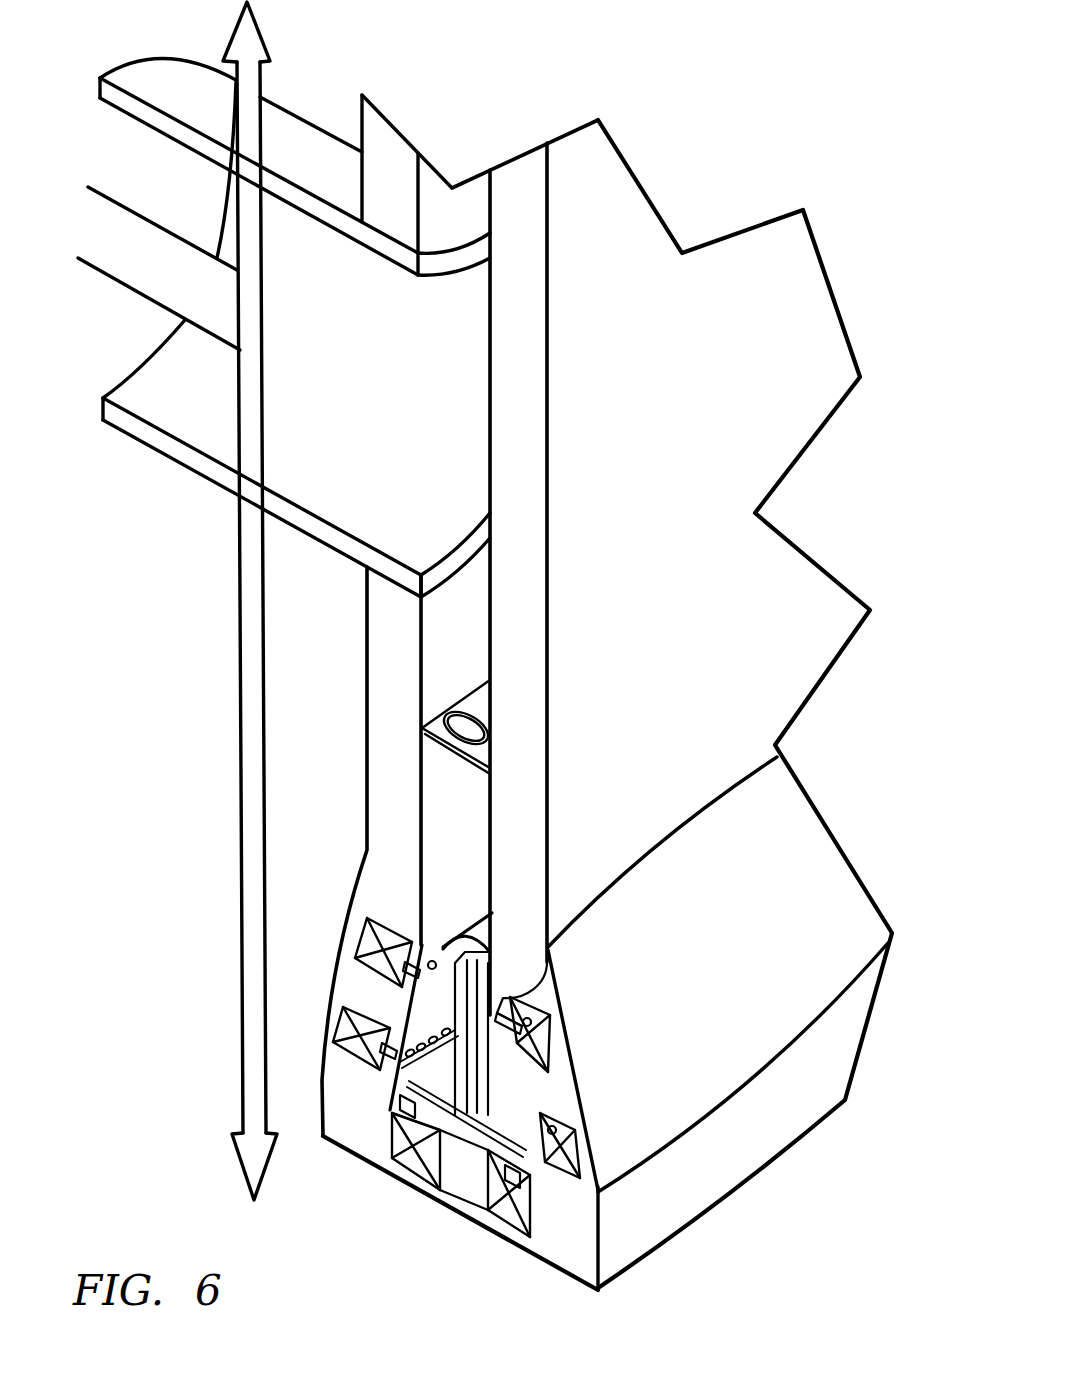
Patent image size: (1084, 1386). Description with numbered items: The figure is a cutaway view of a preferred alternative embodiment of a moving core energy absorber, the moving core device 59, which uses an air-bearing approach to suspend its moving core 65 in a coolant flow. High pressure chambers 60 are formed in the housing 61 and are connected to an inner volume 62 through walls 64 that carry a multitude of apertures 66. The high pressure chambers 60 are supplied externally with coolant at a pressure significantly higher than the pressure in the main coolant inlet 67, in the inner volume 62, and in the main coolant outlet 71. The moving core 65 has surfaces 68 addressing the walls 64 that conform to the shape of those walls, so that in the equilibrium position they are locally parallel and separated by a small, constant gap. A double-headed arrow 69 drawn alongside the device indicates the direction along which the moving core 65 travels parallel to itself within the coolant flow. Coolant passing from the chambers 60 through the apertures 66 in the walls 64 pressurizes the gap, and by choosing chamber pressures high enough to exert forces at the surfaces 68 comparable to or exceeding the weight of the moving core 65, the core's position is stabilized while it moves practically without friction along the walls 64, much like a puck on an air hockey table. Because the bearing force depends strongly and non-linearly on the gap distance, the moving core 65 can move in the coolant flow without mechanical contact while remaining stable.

The moving core device 59 is at (177, 722).
The high pressure chambers 60 is at (413, 955).
The housing 61 is at (815, 840).
The inner volume 62 is at (447, 667).
The walls 64 is at (428, 968).
The moving core 65 is at (498, 1068).
The apertures 66 is at (405, 965).
The main coolant inlet 67 is at (152, 388).
The surfaces 68 is at (445, 943).
The direction arrow 69 is at (247, 418).
The main coolant outlet 71 is at (420, 1163).